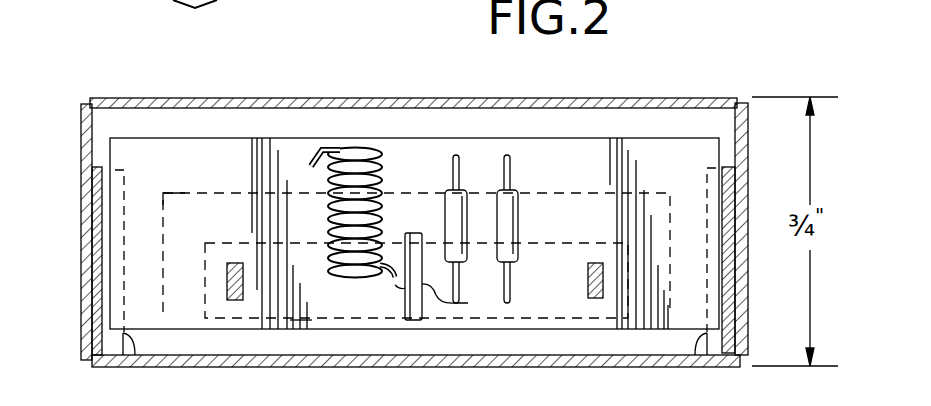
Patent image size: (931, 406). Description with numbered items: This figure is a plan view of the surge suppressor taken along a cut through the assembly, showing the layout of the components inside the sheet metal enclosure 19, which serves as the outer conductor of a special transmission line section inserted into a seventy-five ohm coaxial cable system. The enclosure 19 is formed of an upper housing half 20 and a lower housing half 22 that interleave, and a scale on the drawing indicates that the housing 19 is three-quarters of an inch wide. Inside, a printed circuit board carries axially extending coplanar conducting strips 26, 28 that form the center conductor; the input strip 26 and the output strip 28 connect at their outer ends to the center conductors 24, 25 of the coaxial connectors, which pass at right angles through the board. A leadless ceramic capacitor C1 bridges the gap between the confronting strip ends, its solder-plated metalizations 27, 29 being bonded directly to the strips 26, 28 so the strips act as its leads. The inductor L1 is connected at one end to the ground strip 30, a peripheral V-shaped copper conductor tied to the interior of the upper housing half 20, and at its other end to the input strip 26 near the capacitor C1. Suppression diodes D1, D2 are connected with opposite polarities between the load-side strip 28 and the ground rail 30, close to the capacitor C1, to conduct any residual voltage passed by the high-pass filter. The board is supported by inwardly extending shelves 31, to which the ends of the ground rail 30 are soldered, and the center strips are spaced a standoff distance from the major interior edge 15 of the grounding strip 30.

The sheet metal enclosure 19 is at (126, 86).
The upper housing half 20 is at (92, 150).
The lower housing half 22 is at (81, 262).
The major interior edge of the grounding strip 15 is at (557, 196).
The ground strip 30 is at (188, 192).
The input conducting strip 26 is at (553, 318).
The inductor L1 is at (386, 156).
The suppression diode D1 is at (438, 195).
The suppression diode D2 is at (535, 195).
The capacitor C1 is at (411, 320).
The solder-plated metalization 27 is at (402, 284).
The solder-plated metalization 29 is at (457, 298).
The center conductor 24 is at (236, 300).
The center conductor 25 is at (603, 280).
The output conducting strip 28 is at (257, 307).
The shelves 31 is at (135, 355).